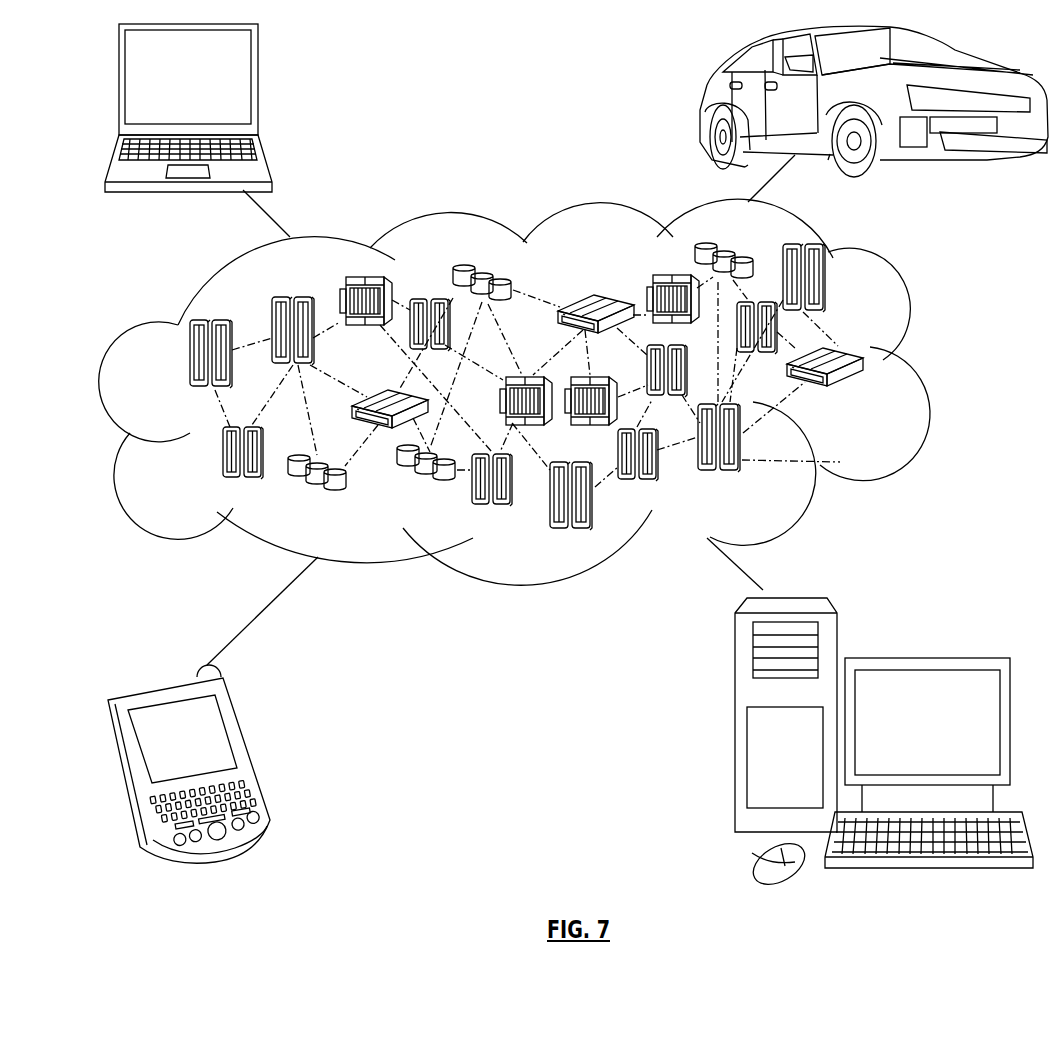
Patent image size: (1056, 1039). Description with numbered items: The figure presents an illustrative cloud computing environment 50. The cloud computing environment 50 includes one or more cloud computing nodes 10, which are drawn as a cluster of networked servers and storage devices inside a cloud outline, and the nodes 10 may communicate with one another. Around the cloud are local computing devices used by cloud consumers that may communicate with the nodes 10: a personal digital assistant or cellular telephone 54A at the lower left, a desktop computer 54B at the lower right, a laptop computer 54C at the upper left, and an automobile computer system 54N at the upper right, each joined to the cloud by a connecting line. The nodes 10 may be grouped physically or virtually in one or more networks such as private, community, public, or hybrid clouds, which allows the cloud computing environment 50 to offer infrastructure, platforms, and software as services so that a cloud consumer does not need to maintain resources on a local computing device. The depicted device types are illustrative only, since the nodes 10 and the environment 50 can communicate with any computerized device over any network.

The laptop computer 54C is at (259, 88).
The automobile computer system 54N is at (700, 104).
The personal digital assistant (PDA) or cellular telephone 54A is at (247, 752).
The desktop computer 54B is at (925, 657).
The cloud computing environment 50 is at (928, 365).
The cloud computing nodes 10 is at (878, 404).